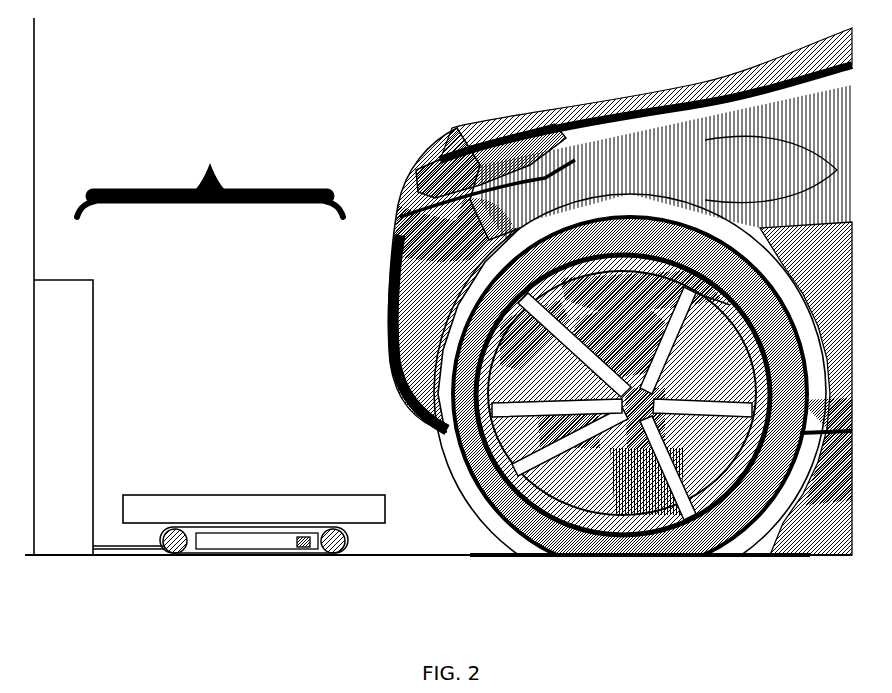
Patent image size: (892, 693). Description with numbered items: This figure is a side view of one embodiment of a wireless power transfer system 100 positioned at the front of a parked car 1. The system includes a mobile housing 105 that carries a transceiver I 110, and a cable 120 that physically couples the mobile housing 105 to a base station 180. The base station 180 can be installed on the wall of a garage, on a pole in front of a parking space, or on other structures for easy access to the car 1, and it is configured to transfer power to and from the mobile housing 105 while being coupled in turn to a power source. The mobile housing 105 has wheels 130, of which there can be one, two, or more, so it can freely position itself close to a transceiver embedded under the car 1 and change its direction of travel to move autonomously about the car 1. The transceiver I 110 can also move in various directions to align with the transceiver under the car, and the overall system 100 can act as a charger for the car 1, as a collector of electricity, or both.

The car 1 is at (452, 128).
The wireless power transfer system 100 is at (210, 173).
The mobile housing 105 is at (263, 432).
The transceiver I 110 is at (207, 505).
The cable 120 is at (143, 558).
The wheels 130 is at (343, 552).
The base station 180 is at (77, 293).